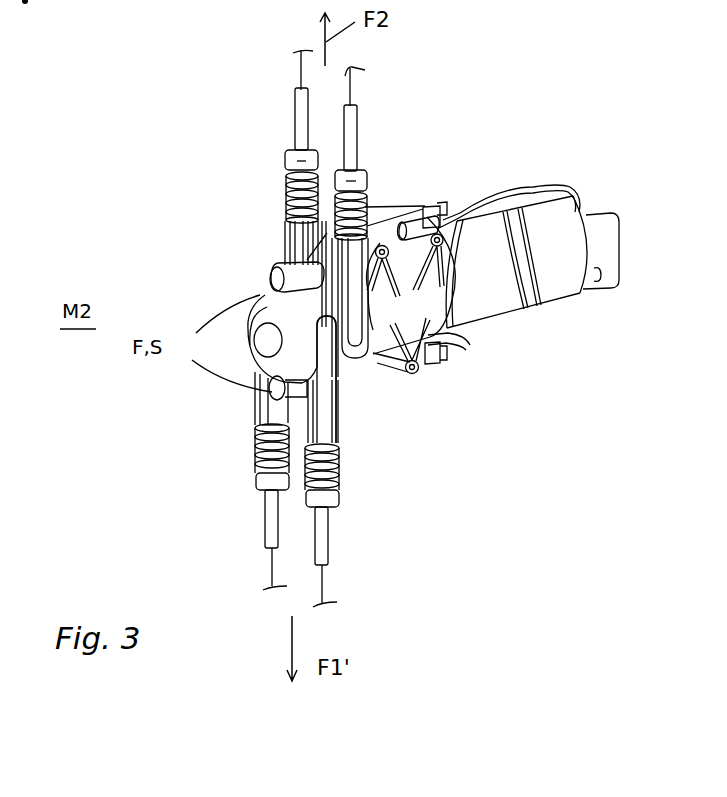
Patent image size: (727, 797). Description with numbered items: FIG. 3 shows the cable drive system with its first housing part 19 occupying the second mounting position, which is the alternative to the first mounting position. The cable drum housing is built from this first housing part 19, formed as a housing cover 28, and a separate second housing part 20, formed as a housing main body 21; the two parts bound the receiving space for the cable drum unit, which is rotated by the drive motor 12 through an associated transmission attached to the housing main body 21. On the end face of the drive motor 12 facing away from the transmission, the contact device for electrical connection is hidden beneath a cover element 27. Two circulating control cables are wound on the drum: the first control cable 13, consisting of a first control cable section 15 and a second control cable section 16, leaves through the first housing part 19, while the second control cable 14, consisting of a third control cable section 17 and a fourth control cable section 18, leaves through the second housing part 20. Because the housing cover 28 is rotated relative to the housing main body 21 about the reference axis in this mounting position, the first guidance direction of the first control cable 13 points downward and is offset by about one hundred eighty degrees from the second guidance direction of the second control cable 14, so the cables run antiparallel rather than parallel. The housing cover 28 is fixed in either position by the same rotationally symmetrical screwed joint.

The drive motor 12 is at (487, 318).
The first control cable 13 is at (215, 566).
The second control cable 14 is at (406, 92).
The first control cable section 15 is at (273, 571).
The second control cable section 16 is at (324, 598).
The third control cable section 17 is at (302, 78).
The fourth control cable section 18 is at (352, 92).
The first housing part 19 is at (325, 393).
The second housing part 20 is at (422, 357).
The housing main body 21 is at (454, 381).
The cover element 27 is at (563, 300).
The housing cover 28 is at (378, 395).